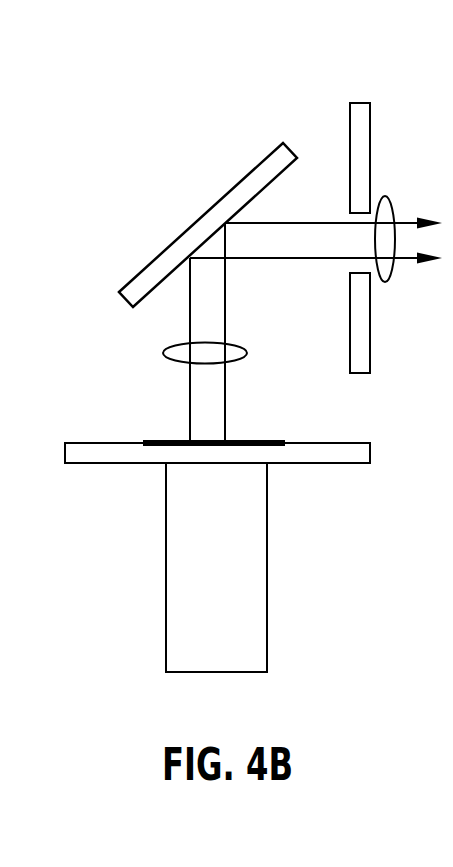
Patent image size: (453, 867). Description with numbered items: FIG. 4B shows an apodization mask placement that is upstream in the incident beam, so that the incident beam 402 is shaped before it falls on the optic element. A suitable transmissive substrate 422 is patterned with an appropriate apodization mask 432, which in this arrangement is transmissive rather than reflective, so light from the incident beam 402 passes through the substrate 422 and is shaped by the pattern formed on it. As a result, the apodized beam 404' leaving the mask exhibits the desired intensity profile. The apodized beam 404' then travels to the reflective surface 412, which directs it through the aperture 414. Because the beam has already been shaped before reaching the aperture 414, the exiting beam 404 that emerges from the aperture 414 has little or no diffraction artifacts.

The incident beam 402 is at (240, 650).
The exiting beam 404 is at (405, 203).
The apodized beam 404' is at (170, 373).
The reflective surface 412 is at (272, 152).
The aperture 414 is at (362, 375).
The transmissive substrate 422 is at (335, 465).
The apodization mask 432 is at (250, 443).